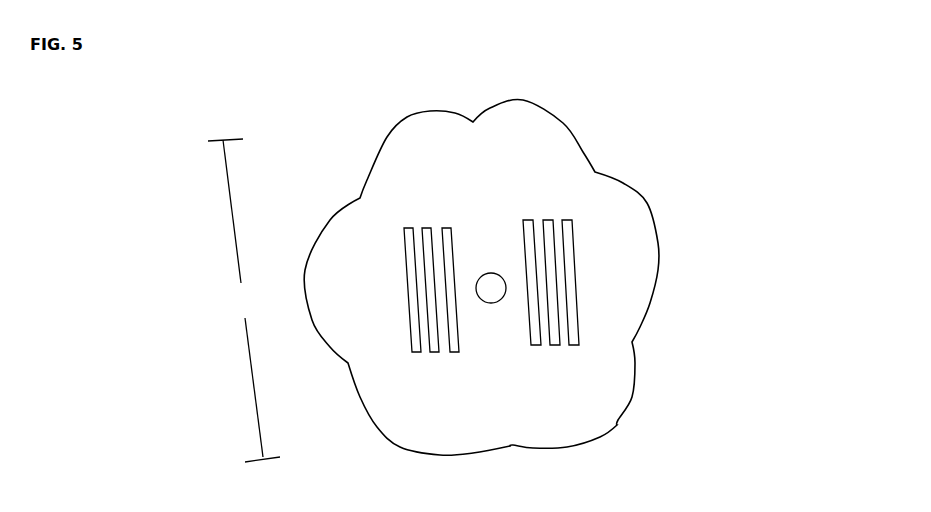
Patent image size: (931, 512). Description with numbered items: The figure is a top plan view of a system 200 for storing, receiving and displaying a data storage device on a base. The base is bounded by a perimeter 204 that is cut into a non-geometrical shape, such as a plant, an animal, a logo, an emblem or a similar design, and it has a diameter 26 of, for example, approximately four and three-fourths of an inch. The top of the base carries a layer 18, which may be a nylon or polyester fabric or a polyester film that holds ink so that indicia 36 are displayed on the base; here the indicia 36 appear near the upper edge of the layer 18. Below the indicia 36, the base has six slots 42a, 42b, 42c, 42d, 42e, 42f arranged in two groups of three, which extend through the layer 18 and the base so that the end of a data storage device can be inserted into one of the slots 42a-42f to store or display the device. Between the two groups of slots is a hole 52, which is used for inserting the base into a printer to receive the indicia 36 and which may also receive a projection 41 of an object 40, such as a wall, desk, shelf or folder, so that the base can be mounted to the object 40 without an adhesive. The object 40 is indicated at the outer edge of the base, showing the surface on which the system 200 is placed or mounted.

The layer 18 is at (538, 115).
The diameter 26 is at (244, 300).
The indicia 36 is at (420, 135).
The object 40 is at (620, 427).
The projection 41 is at (491, 290).
The slot 42a is at (406, 300).
The slot 42b is at (432, 353).
The slot 42c is at (456, 353).
The slot 42d is at (523, 218).
The slot 42e is at (553, 348).
The slot 42f is at (578, 298).
The hole 52 is at (488, 327).
The system 200 is at (647, 342).
The perimeter 204 is at (595, 172).